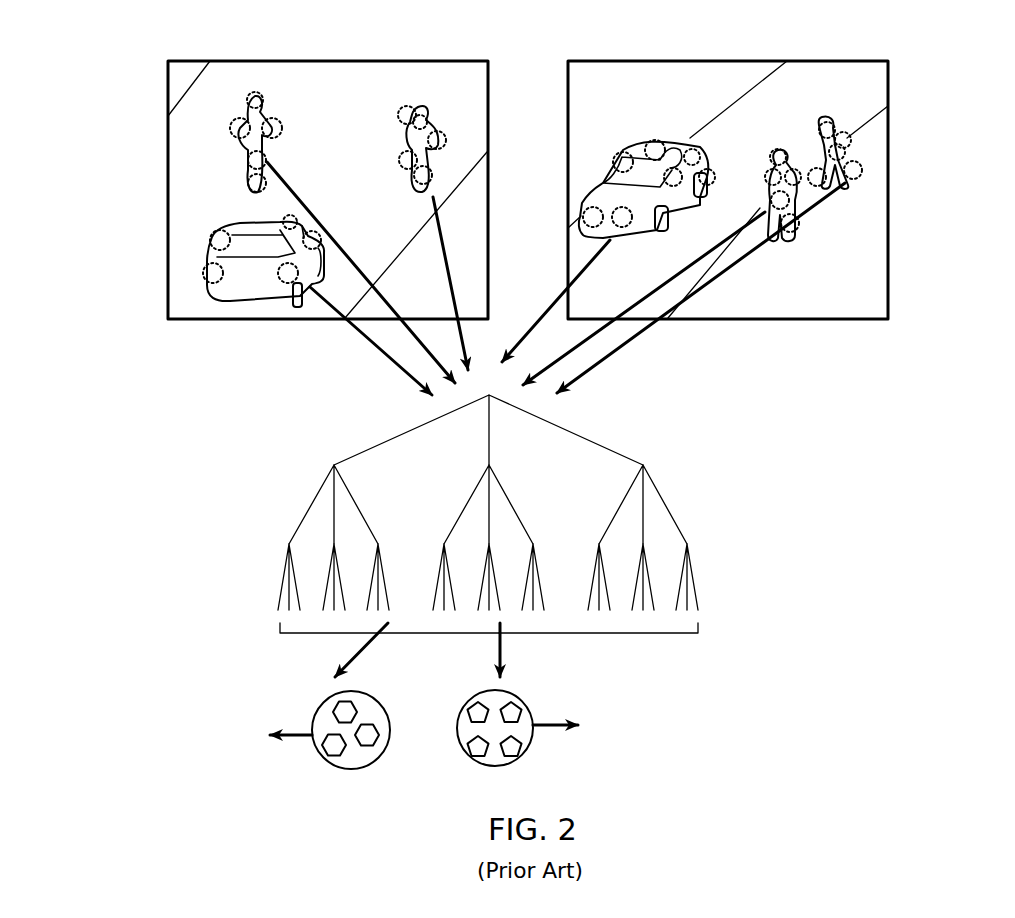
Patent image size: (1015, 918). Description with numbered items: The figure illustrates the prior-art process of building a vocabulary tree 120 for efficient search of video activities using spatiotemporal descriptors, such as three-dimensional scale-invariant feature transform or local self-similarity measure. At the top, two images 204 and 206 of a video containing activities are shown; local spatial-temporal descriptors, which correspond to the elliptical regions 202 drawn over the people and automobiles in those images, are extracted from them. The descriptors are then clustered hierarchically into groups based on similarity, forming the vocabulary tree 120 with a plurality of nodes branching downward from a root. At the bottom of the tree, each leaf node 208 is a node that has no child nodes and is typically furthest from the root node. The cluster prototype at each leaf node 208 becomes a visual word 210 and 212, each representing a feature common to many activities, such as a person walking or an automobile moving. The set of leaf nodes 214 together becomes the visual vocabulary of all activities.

The vocabulary tree 120 is at (608, 448).
The elliptical regions 202 is at (213, 238).
The image 204 is at (168, 115).
The image 206 is at (888, 106).
The leaf node 208 is at (280, 610).
The visual word 210 is at (320, 700).
The visual word 212 is at (527, 757).
The set of leaf nodes 214 is at (667, 633).